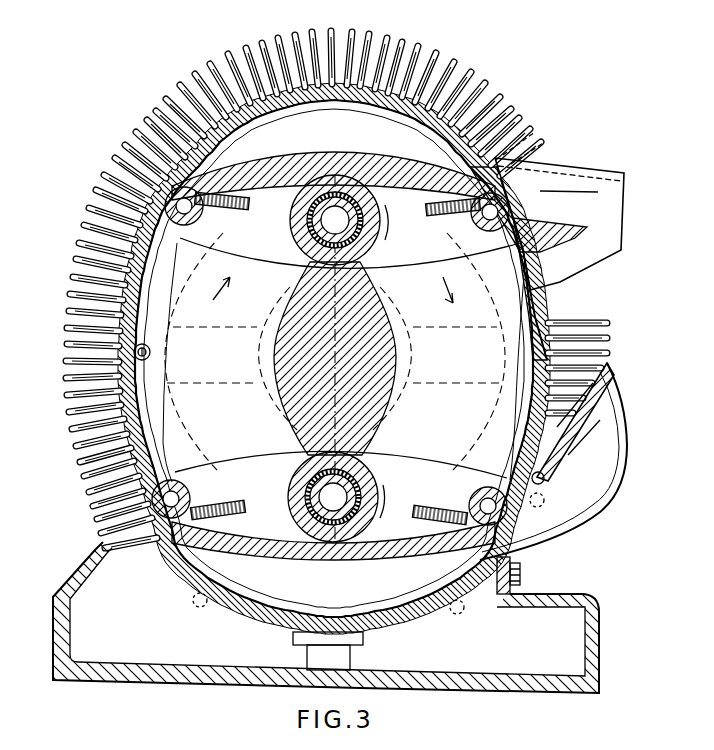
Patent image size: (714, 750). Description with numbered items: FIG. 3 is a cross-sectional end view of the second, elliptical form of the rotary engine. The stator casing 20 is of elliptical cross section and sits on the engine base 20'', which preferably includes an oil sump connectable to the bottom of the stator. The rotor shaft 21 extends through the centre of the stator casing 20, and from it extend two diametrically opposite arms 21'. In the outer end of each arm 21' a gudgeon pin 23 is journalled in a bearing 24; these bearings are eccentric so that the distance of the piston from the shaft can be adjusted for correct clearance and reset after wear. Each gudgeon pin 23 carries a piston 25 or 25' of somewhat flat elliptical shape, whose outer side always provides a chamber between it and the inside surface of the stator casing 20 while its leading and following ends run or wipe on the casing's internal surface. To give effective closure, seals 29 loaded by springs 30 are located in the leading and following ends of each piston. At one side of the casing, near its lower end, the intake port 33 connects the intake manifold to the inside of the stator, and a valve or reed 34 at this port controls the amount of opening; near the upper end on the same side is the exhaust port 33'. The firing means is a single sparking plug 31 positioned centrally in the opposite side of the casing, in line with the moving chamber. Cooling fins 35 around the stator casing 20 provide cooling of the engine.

The stator casing 20 is at (334, 358).
The engine base 20'' is at (347, 617).
The rotor shaft 21 is at (335, 358).
The arm 21' is at (354, 358).
The gudgeon pin 23 is at (334, 358).
The bearing 24 is at (372, 233).
The piston 25 is at (346, 227).
The piston 25' is at (339, 505).
The seal 29 is at (332, 356).
The spring 30 is at (335, 358).
The sparking plug 31 is at (150, 353).
The intake port 33 is at (553, 461).
The exhaust port 33' is at (559, 224).
The valve or reed 34 is at (537, 544).
The cooling fins 35 is at (500, 97).